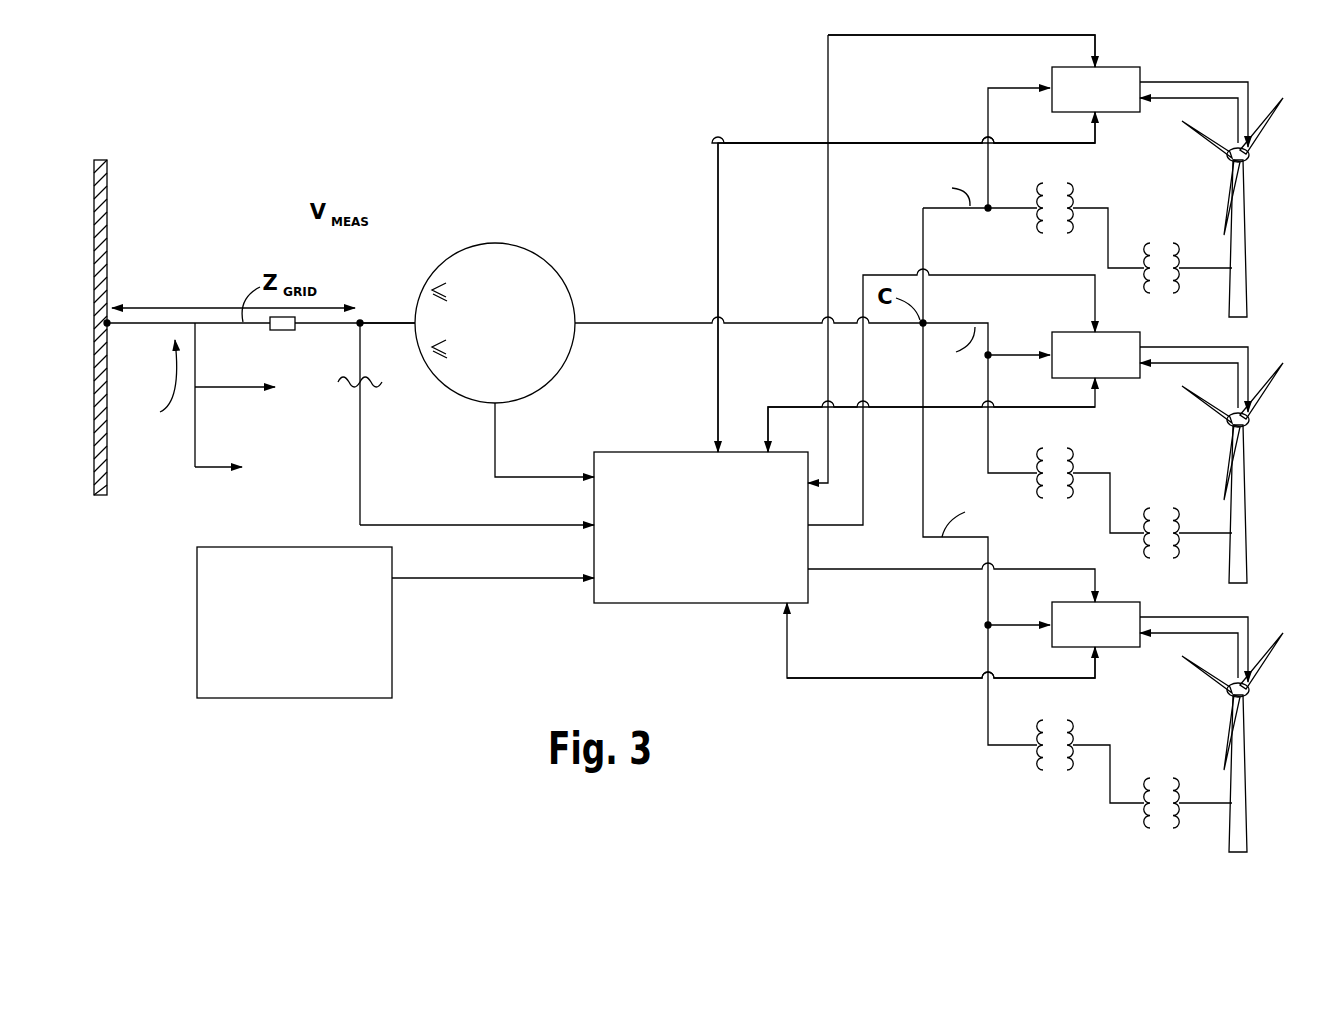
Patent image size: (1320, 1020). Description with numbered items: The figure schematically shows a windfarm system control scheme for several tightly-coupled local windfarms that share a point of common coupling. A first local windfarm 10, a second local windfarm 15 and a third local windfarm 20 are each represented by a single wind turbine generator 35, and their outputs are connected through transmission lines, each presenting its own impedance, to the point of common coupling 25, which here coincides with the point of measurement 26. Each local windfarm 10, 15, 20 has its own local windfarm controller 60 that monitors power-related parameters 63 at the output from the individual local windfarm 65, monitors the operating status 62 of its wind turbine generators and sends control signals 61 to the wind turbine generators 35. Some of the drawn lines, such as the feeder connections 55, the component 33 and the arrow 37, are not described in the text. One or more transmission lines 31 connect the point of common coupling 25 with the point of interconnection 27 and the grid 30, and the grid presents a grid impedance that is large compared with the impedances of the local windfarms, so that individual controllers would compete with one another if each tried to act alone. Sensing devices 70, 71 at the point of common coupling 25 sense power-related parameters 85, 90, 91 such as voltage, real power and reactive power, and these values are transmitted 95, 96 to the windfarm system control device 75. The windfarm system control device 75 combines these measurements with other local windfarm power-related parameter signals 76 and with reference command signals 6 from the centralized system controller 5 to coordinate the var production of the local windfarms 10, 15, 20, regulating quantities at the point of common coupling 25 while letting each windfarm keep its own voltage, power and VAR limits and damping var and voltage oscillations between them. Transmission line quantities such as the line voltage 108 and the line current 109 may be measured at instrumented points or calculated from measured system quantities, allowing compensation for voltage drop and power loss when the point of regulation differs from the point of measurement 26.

The centralized system controller 5 is at (326, 699).
The reference command signals 6 is at (530, 579).
The first local windfarm 10 is at (1266, 239).
The second local windfarm 15 is at (1266, 507).
The third local windfarm 20 is at (1266, 786).
The point of common coupling 25 is at (360, 326).
The point of measurement 26 is at (363, 322).
The point of interconnection 27 is at (110, 326).
The grid 30 is at (107, 242).
The transmission lines 31 is at (215, 320).
The grid impedance element 33 is at (284, 331).
The wind turbine generator 35 is at (1250, 158).
The power flow arrow 37 is at (156, 383).
The collector feeder line 55 is at (922, 236).
The local windfarm controller 60 is at (1124, 67).
The control signals 61 is at (1240, 82).
The operating status 62 is at (1162, 100).
The power-related parameters 63 is at (989, 188).
The output from the individual local windfarm 65 is at (988, 220).
The sensing device 70 is at (344, 382).
The sensing device 71 is at (556, 272).
The windfarm system control device 75 is at (654, 604).
The local windfarm power-related parameter signals 76 is at (716, 402).
The power-related parameter 85 is at (360, 318).
The power-related parameter 90 is at (438, 282).
The power-related parameter 91 is at (442, 360).
The transmission of power-related parameters 95 is at (497, 450).
The transmission of power-related parameters 96 is at (360, 462).
The line voltage (Vt) 108 is at (208, 468).
The line current (It) 109 is at (248, 389).